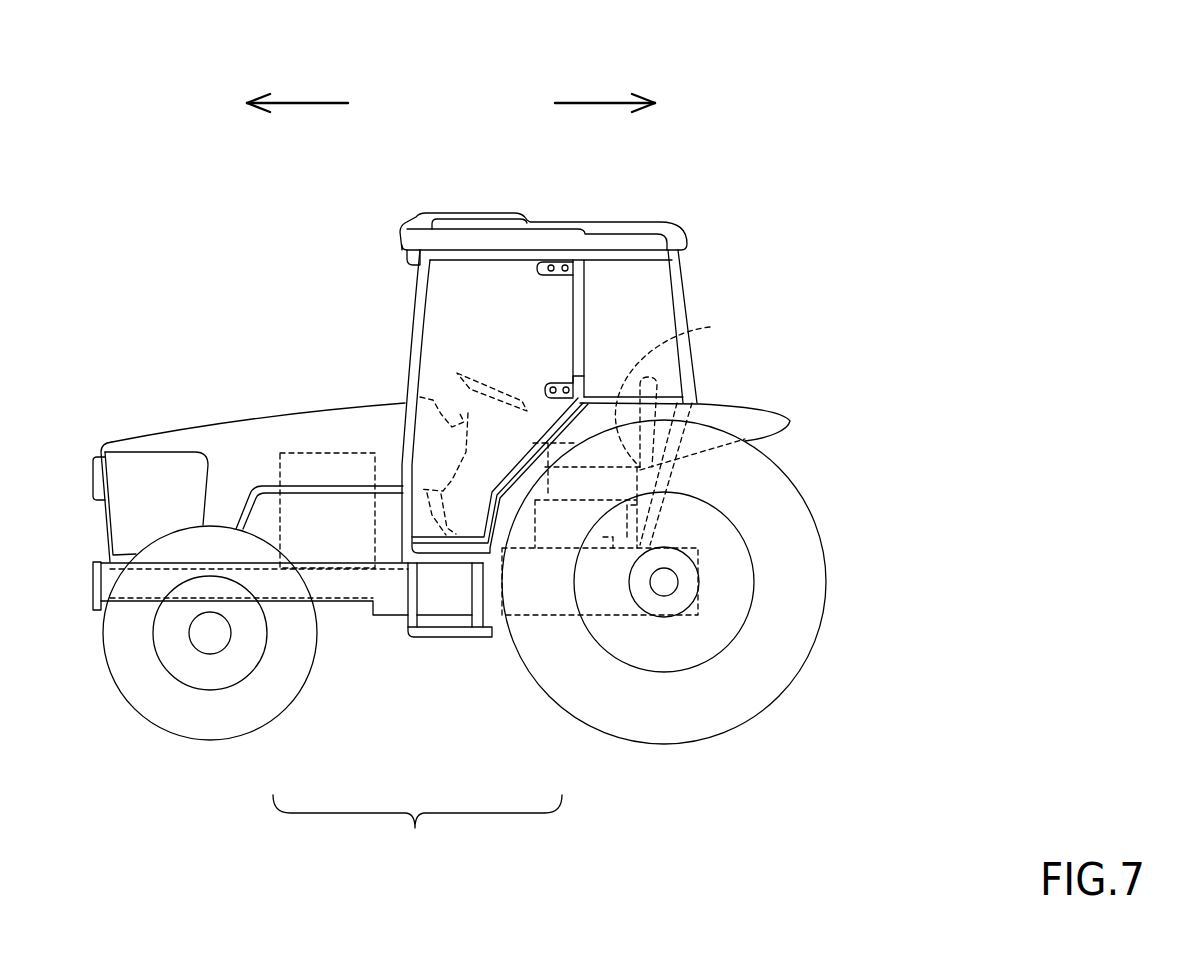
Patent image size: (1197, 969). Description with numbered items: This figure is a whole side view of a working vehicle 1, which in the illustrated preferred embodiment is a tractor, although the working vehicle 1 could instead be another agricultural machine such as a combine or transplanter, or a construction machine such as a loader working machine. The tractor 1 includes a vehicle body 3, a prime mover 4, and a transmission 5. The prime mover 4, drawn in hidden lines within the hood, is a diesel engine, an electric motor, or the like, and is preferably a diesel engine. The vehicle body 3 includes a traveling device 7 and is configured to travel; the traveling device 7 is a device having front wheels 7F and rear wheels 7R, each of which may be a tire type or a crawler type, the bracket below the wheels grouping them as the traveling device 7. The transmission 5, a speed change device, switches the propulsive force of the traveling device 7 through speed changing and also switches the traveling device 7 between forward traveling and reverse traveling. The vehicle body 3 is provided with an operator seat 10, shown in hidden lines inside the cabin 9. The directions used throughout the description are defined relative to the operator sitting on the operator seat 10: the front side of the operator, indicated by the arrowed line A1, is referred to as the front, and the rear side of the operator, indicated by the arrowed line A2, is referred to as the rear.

The working vehicle 1 is at (716, 226).
The vehicle body 3 is at (355, 625).
The prime mover 4 is at (328, 453).
The transmission 5 is at (490, 595).
The traveling device 7 is at (417, 829).
The front wheels 7F is at (255, 708).
The rear wheels 7R is at (593, 700).
The cabin 9 is at (463, 262).
The operator seat 10 is at (705, 328).
The arrowed line A1 is at (307, 101).
The arrowed line A2 is at (597, 101).